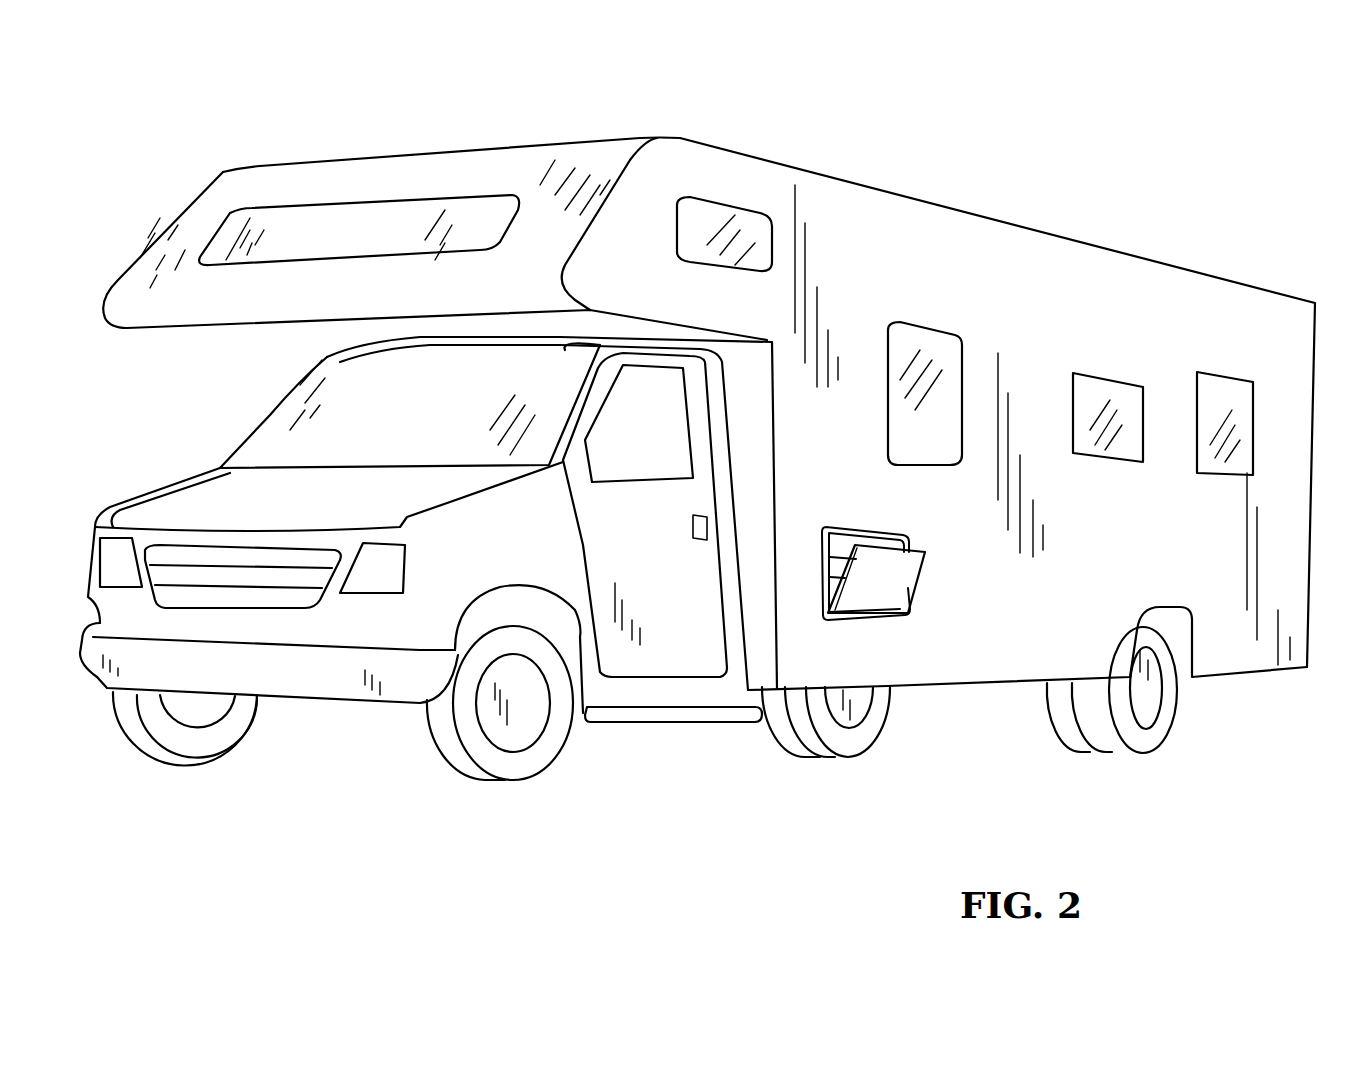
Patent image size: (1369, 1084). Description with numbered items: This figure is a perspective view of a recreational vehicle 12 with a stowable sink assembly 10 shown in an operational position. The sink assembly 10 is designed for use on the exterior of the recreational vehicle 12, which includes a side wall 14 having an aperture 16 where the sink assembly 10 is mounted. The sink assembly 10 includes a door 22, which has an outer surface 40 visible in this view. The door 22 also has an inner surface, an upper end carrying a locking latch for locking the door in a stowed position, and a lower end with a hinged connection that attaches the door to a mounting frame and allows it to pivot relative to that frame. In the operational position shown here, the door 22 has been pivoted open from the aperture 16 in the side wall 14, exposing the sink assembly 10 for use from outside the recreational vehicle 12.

The recreational vehicle 12 is at (1118, 183).
The side wall 14 is at (1238, 303).
The stowable sink assembly 10 is at (840, 510).
The aperture 16 is at (887, 540).
The door 22 is at (908, 580).
The outer surface 40 is at (893, 593).